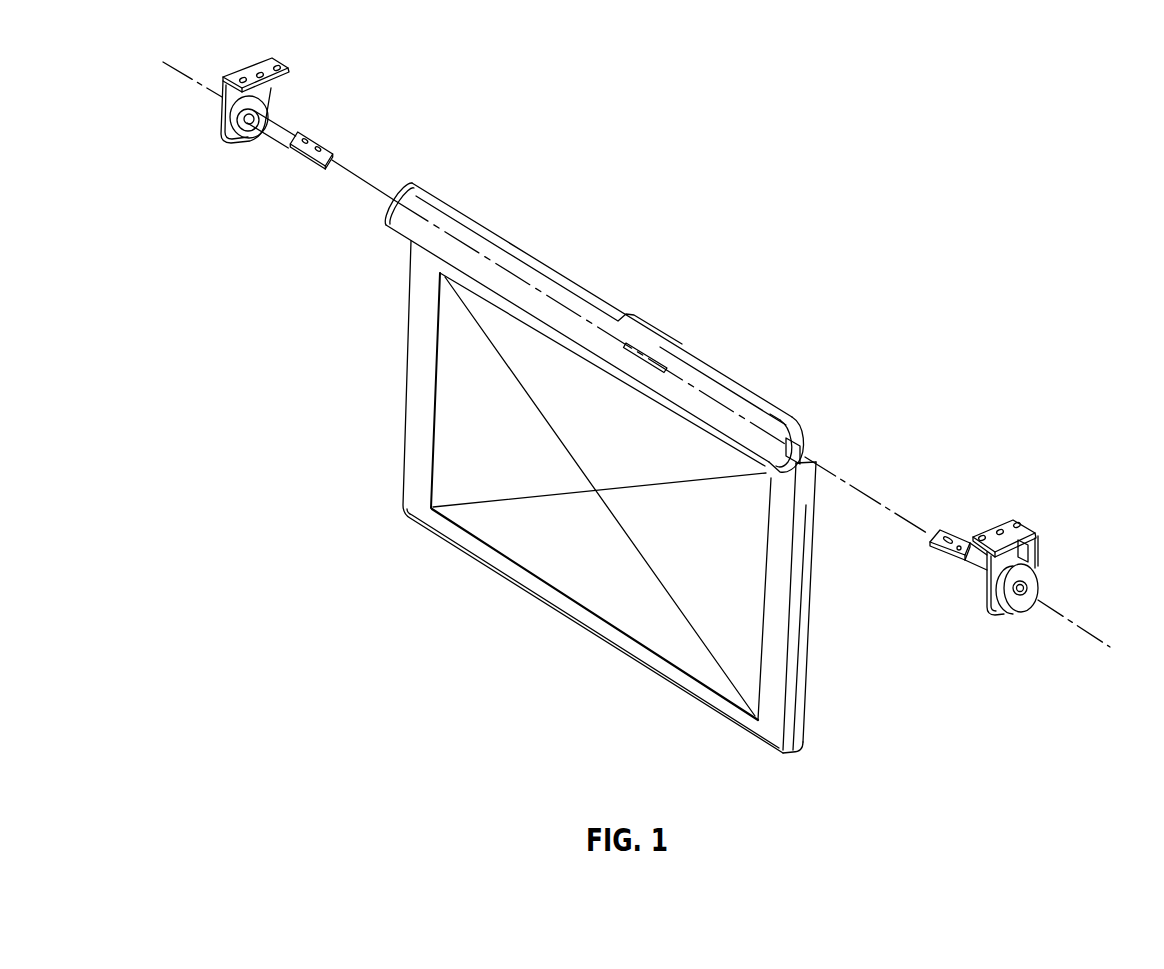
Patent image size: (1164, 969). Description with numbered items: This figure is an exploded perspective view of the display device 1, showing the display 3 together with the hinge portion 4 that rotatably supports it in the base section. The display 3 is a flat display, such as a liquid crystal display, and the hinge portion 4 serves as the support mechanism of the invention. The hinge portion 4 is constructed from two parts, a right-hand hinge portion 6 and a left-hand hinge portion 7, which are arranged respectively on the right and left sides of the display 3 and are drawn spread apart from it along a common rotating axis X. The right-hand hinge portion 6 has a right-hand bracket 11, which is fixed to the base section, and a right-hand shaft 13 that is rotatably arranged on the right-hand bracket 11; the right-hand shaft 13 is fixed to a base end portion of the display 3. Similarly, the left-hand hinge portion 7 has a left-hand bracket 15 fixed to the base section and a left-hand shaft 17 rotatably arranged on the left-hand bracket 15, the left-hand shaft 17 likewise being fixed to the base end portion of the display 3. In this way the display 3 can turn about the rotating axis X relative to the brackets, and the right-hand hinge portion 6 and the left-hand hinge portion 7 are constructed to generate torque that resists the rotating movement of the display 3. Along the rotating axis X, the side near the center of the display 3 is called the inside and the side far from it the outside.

The display device 1 is at (905, 123).
The display 3 is at (429, 624).
The hinge portion 4 is at (954, 401).
The right-hand hinge portion 6 is at (971, 489).
The left-hand hinge portion 7 is at (300, 71).
The right-hand bracket 11 is at (983, 603).
The right-hand shaft 13 is at (963, 571).
The left-hand bracket 15 is at (221, 132).
The left-hand shaft 17 is at (257, 137).
The rotating axis X is at (1078, 625).